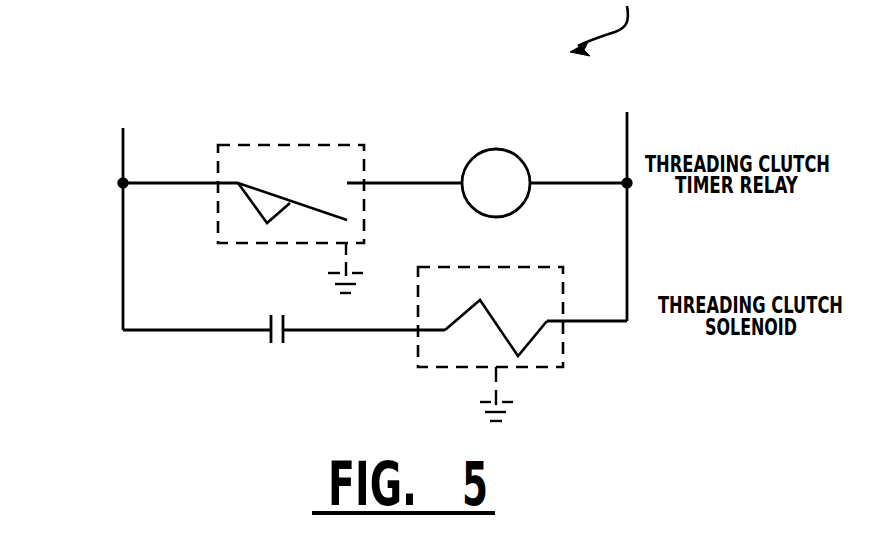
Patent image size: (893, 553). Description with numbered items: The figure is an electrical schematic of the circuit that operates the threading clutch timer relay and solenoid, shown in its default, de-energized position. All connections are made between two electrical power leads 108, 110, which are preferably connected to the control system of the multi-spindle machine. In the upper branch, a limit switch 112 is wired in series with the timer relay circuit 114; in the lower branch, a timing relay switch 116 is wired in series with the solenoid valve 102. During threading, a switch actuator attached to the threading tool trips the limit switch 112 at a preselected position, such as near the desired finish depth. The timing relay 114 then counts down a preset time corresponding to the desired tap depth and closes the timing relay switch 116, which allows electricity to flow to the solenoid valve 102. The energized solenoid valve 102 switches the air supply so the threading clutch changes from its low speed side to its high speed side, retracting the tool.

The solenoid valve 102 is at (524, 266).
The electrical power lead 108 is at (122, 150).
The electrical power lead 110 is at (628, 128).
The limit switch 112 is at (271, 144).
The timer relay circuit 114 is at (498, 148).
The timing relay switch 116 is at (286, 339).